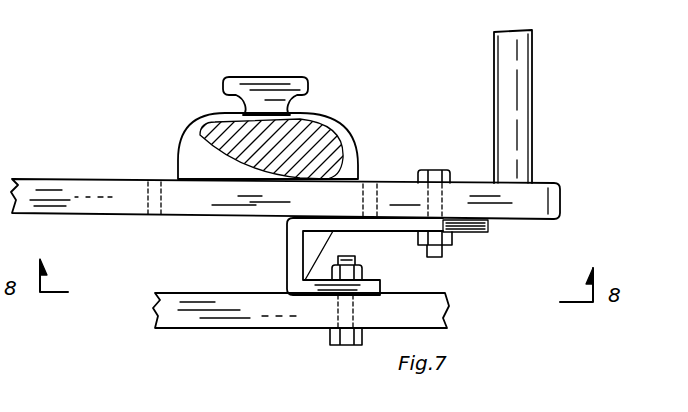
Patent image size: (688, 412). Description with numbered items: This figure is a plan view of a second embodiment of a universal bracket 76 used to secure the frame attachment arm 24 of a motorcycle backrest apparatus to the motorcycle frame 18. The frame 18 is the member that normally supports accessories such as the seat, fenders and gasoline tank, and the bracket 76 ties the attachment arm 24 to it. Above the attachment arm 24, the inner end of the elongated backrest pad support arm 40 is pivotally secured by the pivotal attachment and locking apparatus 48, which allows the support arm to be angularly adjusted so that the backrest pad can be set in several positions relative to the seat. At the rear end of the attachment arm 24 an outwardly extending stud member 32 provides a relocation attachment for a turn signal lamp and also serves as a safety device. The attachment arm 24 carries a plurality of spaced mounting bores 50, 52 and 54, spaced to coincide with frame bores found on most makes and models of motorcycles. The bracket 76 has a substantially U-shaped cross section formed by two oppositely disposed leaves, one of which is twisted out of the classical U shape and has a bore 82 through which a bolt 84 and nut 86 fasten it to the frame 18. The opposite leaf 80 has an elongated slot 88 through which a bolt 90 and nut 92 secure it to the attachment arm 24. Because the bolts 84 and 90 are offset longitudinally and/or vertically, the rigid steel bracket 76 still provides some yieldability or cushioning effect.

The motorcycle frame 18 is at (159, 330).
The frame attachment arm 24 is at (51, 186).
The stud member 32 is at (508, 38).
The backrest pad support arm 40 is at (332, 128).
The pivotal attachment and locking apparatus 48 is at (245, 72).
The mounting bore 50 is at (152, 197).
The mounting bore 52 is at (365, 200).
The mounting bore 54 is at (430, 170).
The bracket 76 is at (318, 238).
The leaf member 80 is at (490, 228).
The bore 82 is at (345, 290).
The bolt 84 is at (335, 312).
The nut 86 is at (362, 272).
The elongated slot 88 is at (326, 223).
The bolt 90 is at (440, 203).
The nut 92 is at (447, 250).